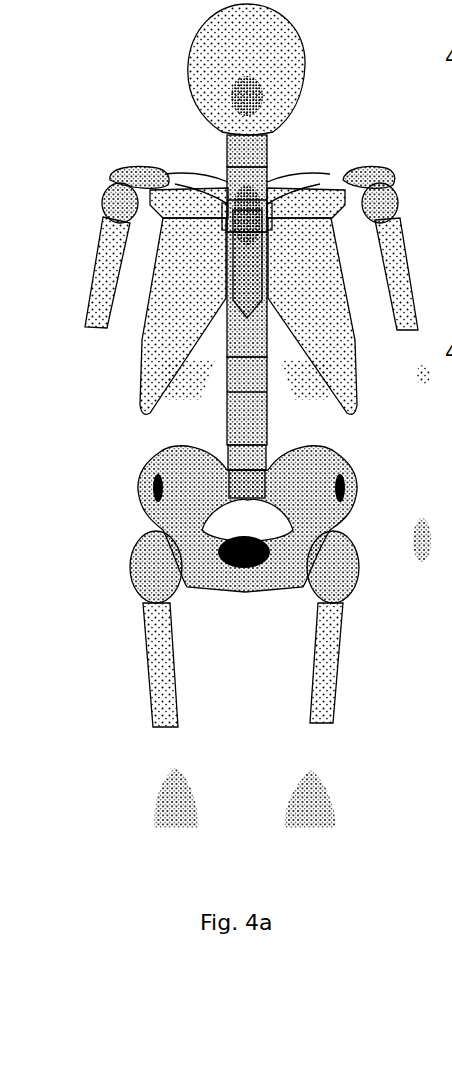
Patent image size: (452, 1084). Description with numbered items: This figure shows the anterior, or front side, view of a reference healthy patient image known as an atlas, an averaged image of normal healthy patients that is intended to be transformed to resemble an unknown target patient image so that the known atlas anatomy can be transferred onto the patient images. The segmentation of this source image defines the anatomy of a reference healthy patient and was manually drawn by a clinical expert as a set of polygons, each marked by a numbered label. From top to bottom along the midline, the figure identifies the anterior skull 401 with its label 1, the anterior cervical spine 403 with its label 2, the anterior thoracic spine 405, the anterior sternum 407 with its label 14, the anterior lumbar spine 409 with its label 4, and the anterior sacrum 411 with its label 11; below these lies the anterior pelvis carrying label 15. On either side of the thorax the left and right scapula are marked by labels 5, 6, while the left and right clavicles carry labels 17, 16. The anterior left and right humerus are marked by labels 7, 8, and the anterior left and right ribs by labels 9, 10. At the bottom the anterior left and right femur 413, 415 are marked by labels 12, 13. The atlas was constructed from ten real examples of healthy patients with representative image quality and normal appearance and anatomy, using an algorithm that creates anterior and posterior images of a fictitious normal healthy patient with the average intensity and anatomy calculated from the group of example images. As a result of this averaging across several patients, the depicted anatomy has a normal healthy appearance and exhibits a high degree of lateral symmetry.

The anterior skull 401 is at (171, 69).
The anterior cervical spine 403 is at (152, 144).
The anterior thoracic spine 405 is at (141, 338).
The anterior sternum 407 is at (146, 242).
The anterior lumbar spine 409 is at (228, 450).
The anterior sacrum 411 is at (156, 478).
The anterior left femur 413 is at (283, 627).
The anterior right femur 415 is at (115, 629).
The skull label 1 is at (246, 69).
The cervical spine label 2 is at (247, 151).
The lumbar spine label 4 is at (247, 401).
The left scapula label 5 is at (169, 178).
The right scapula label 6 is at (306, 205).
The left humerus label 7 is at (390, 256).
The right humerus label 8 is at (111, 255).
The left ribs label 9 is at (312, 316).
The right ribs label 10 is at (183, 316).
The sacrum label 11 is at (247, 484).
The left femur label 12 is at (333, 627).
The right femur label 13 is at (156, 629).
The sternum label 14 is at (247, 242).
The pelvis label 15 is at (247, 519).
The right clavicle label 16 is at (189, 201).
The left clavicle label 17 is at (331, 181).